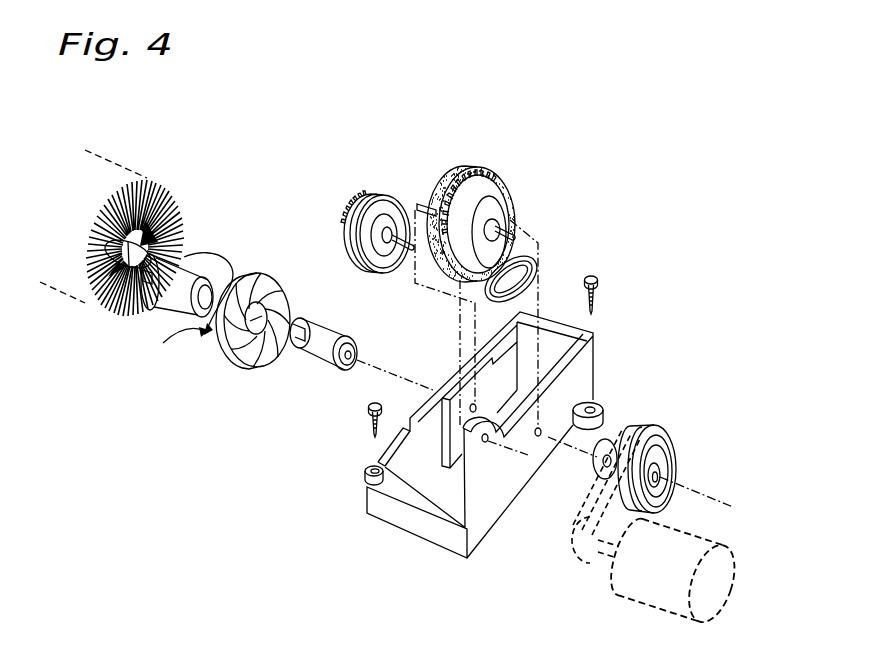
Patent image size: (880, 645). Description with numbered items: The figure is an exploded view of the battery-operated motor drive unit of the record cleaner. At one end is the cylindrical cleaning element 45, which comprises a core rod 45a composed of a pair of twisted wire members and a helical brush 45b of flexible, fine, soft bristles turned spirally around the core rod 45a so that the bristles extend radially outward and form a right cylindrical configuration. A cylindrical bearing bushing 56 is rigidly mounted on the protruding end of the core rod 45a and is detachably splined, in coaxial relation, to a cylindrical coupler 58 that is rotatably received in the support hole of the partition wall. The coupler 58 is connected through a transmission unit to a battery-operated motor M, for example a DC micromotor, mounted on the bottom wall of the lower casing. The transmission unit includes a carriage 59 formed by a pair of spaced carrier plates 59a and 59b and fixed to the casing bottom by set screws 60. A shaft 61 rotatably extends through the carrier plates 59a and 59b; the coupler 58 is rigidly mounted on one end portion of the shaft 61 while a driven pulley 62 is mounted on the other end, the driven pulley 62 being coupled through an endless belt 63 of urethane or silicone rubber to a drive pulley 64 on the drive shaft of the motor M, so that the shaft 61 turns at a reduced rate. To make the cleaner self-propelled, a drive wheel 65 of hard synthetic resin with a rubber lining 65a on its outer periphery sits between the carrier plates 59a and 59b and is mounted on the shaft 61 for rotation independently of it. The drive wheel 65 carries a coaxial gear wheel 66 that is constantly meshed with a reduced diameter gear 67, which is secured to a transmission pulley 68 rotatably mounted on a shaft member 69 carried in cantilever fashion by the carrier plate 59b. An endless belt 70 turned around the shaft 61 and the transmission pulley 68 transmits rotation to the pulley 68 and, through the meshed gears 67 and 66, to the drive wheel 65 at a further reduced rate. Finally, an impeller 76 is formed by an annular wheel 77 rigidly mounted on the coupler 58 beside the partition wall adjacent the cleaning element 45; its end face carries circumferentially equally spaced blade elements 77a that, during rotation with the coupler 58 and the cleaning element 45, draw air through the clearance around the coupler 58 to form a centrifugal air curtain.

The cylindrical cleaning element 45 is at (86, 287).
The core rod 45a is at (179, 207).
The helical brush 45b is at (150, 182).
The cylindrical bearing bushing 56 is at (166, 291).
The cylindrical coupler 58 is at (305, 356).
The carriage 59 is at (594, 348).
The carrier plate 59a is at (566, 392).
The carrier plate 59b is at (368, 468).
The set screw 60 is at (598, 281).
The shaft 61 is at (420, 204).
The driven pulley 62 is at (664, 428).
The endless belt 63 is at (599, 482).
The drive pulley 64 is at (566, 539).
The drive wheel 65 is at (462, 168).
The rubber lining 65a is at (481, 173).
The gear wheel 66 is at (506, 208).
The reduced diameter gear 67 is at (354, 207).
The transmission pulley 68 is at (363, 262).
The shaft member 69 is at (410, 249).
The endless belt 70 is at (541, 258).
The impeller 76 is at (258, 274).
The annular wheel 77 is at (214, 345).
The blade element 77a is at (256, 362).
The motor M is at (618, 596).